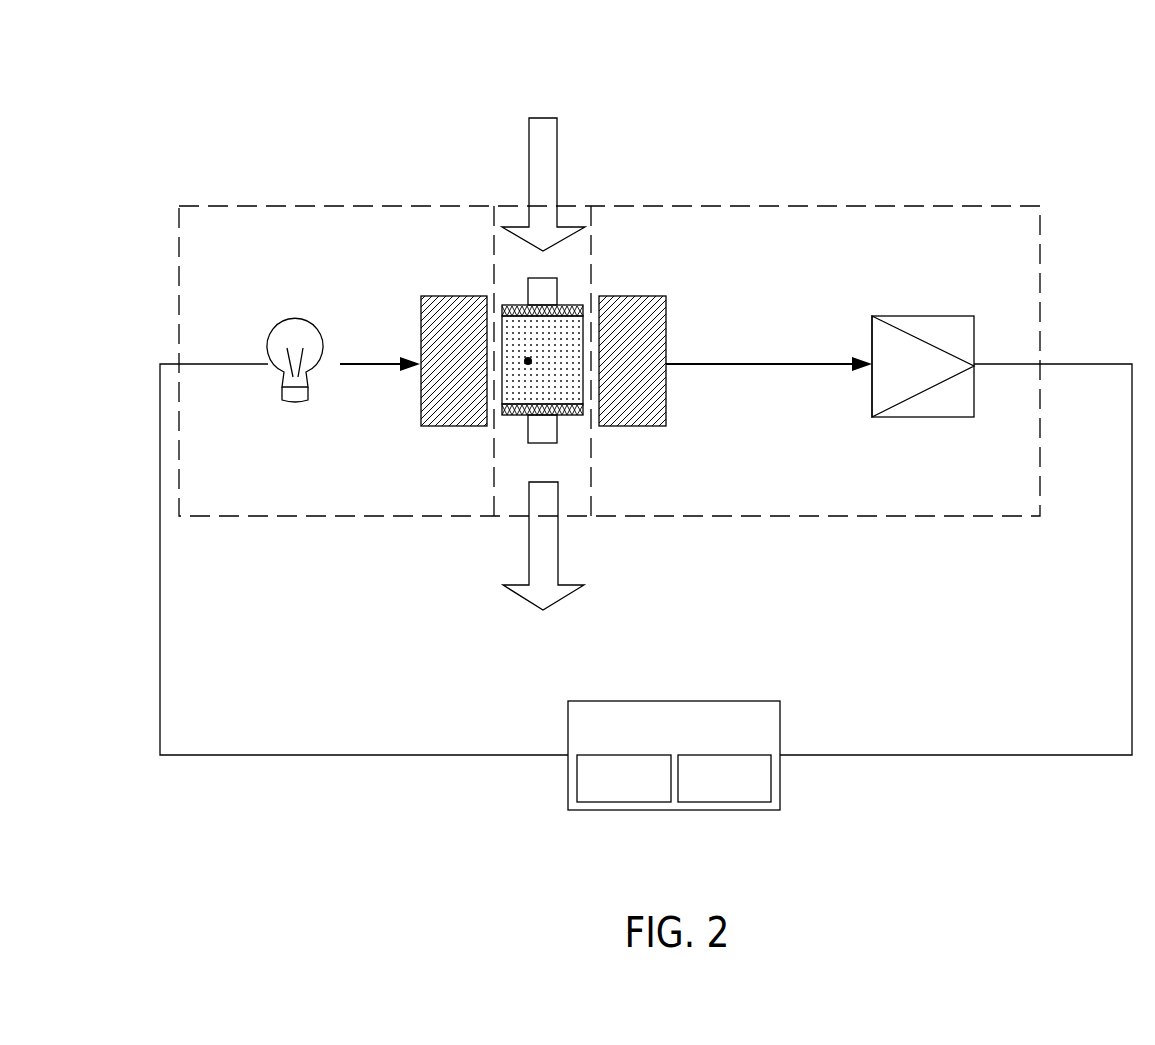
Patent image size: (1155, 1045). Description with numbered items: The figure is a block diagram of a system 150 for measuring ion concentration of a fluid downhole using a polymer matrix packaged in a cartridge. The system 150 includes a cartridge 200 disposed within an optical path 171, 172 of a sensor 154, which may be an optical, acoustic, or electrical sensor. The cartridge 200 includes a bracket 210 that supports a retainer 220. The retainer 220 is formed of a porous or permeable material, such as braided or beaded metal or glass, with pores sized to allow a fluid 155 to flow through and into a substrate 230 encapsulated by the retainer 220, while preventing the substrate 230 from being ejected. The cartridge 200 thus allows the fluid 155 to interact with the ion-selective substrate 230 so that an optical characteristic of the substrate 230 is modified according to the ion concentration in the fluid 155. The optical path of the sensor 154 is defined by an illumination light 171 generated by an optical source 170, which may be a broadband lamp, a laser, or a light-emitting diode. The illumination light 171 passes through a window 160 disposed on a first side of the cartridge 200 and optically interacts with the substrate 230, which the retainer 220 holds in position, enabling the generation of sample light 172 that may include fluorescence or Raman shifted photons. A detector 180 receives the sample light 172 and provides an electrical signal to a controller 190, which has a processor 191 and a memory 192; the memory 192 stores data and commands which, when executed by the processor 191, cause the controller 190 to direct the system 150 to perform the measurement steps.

The system 150 is at (105, 67).
The sensor 154 is at (279, 205).
The fluid 155 is at (545, 116).
The window 160 is at (450, 296).
The optical source 170 is at (269, 330).
The illumination light 171 is at (378, 358).
The sample light 172 is at (767, 363).
The detector 180 is at (917, 316).
The controller 190 is at (690, 742).
The processor 191 is at (607, 792).
The memory 192 is at (706, 792).
The cartridge 200 is at (494, 240).
The bracket 210 is at (558, 290).
The retainer 220 is at (565, 417).
The substrate 230 is at (528, 361).